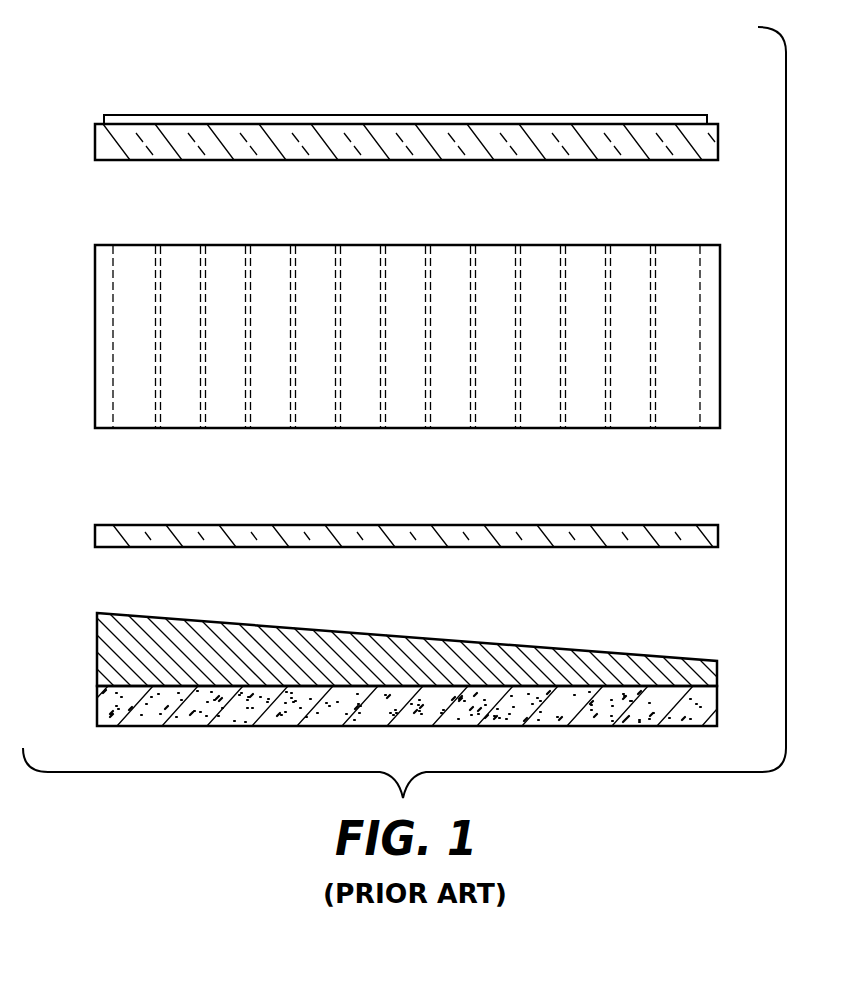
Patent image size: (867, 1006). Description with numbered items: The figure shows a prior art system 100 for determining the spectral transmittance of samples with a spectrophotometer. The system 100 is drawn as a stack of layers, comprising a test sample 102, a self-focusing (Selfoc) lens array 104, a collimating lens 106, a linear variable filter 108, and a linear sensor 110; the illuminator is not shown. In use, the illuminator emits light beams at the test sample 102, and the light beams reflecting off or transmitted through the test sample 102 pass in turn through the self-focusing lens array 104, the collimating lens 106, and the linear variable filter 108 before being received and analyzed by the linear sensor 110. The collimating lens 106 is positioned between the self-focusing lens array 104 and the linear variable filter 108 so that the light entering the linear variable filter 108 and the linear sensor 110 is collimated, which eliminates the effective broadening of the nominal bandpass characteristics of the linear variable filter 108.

The prior art system 100 is at (207, 73).
The test sample 102 is at (590, 113).
The self-focusing lens array 104 is at (588, 244).
The collimating lens 106 is at (592, 523).
The linear variable filter 108 is at (590, 652).
The linear sensor 110 is at (97, 713).